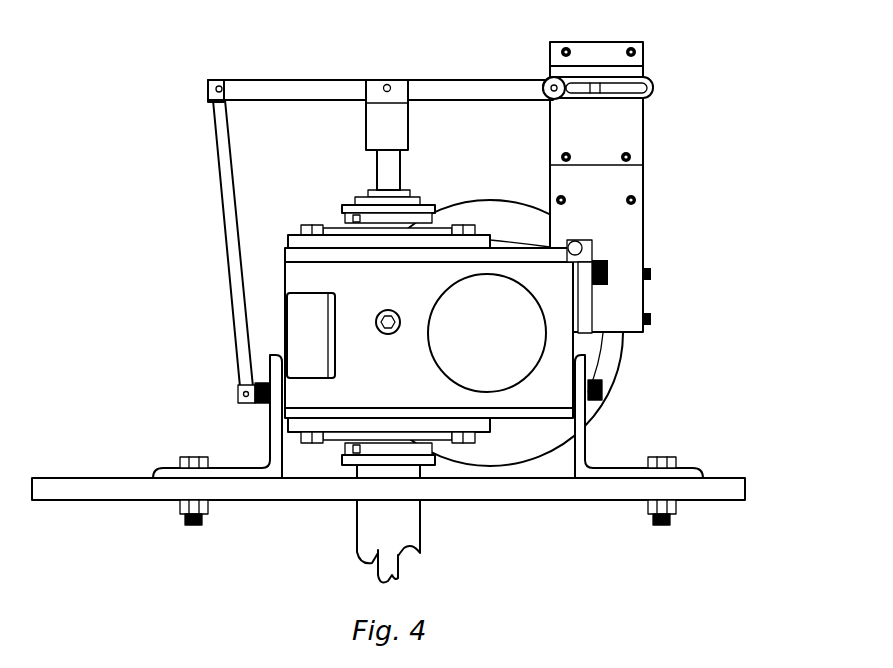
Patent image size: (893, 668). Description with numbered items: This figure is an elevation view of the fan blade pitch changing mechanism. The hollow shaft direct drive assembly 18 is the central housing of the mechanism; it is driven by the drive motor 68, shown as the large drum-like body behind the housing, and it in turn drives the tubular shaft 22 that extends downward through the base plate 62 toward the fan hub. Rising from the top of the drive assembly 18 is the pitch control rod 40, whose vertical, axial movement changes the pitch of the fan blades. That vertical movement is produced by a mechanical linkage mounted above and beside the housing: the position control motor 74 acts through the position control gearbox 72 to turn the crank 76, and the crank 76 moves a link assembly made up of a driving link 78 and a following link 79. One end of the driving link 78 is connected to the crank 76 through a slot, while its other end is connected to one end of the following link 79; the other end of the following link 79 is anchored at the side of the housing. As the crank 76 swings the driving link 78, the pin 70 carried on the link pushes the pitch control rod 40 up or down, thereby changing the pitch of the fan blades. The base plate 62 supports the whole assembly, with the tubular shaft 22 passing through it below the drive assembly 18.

The hollow shaft direct drive assembly 18 is at (322, 232).
The tubular shaft 22 is at (375, 530).
The pitch control rod 40 is at (390, 175).
The base plate 62 is at (127, 485).
The drive motor 68 is at (610, 358).
The pin 70 is at (384, 85).
The position control gearbox 72 is at (633, 62).
The position control motor 74 is at (662, 237).
The crank 76 is at (549, 81).
The driving link 78 is at (438, 83).
The following link 79 is at (224, 147).